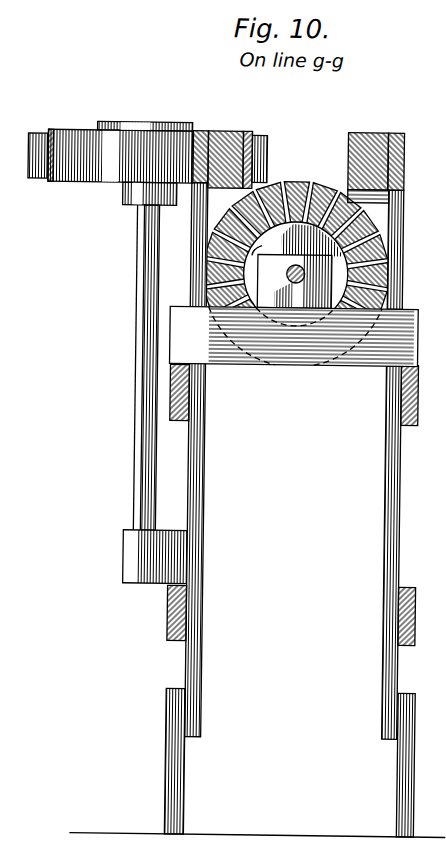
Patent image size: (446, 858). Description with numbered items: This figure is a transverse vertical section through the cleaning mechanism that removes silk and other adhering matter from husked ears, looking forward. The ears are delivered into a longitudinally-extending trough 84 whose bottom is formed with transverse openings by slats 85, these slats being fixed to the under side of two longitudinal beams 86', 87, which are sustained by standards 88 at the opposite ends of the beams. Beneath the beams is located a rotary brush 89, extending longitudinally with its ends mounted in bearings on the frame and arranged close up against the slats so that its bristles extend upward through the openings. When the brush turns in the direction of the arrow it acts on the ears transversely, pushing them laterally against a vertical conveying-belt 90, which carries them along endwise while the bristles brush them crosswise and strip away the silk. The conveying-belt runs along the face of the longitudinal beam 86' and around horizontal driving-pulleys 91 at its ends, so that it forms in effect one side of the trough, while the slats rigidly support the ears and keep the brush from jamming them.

The horizontal driving-pulleys 91 is at (78, 146).
The longitudinal beam 86' is at (222, 151).
The vertical conveying-belt 90 is at (252, 138).
The trough 84 is at (327, 154).
The longitudinal beam 87 is at (373, 148).
The slats 85 is at (278, 197).
The rotary brush 89 is at (400, 256).
The standards 88 is at (396, 478).